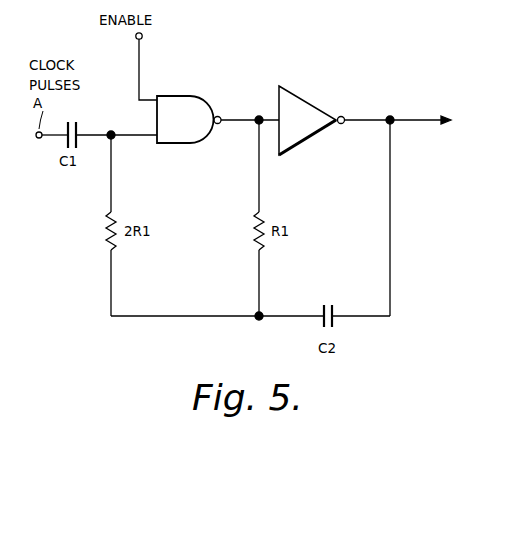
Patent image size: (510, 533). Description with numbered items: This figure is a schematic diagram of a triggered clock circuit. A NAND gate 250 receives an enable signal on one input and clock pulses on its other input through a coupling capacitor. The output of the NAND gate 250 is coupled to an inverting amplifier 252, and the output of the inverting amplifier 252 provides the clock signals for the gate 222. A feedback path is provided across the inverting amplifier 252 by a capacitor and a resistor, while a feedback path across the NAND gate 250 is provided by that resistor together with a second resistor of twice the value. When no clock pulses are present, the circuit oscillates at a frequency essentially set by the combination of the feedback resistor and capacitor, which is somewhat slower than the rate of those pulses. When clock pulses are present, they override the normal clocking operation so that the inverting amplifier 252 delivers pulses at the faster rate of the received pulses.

The NAND gate 250 is at (184, 96).
The inverting amplifier 252 is at (307, 100).
The gate 222 is at (461, 185).